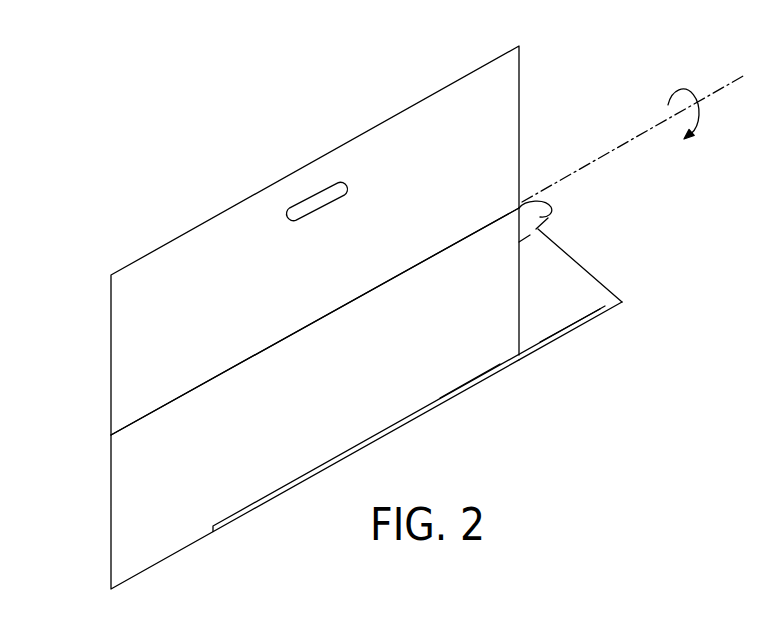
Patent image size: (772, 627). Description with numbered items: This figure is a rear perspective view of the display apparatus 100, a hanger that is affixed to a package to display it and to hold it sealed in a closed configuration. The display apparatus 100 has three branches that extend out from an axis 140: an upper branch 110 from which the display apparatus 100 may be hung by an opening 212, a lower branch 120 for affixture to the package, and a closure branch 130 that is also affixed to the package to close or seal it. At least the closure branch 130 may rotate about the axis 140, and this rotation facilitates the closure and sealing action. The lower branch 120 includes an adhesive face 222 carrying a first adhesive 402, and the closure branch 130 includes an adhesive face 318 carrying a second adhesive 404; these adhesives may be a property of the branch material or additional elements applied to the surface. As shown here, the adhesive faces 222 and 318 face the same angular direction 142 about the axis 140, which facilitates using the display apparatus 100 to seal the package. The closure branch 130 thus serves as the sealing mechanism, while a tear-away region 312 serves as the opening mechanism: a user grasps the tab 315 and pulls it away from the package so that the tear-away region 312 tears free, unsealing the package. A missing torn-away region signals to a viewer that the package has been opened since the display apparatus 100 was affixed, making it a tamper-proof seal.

The display apparatus 100 is at (602, 97).
The upper branch 110 is at (120, 284).
The lower branch 120 is at (124, 556).
The closure branch 130 is at (590, 290).
The axis 140 is at (143, 416).
The angular direction 142 is at (633, 138).
The opening 212 is at (314, 198).
The adhesive face 222 is at (407, 400).
The tear-away region 312 is at (531, 223).
The tab 315 is at (549, 214).
The adhesive face 318 is at (579, 307).
The first adhesive 402 is at (460, 367).
The second adhesive 404 is at (548, 327).